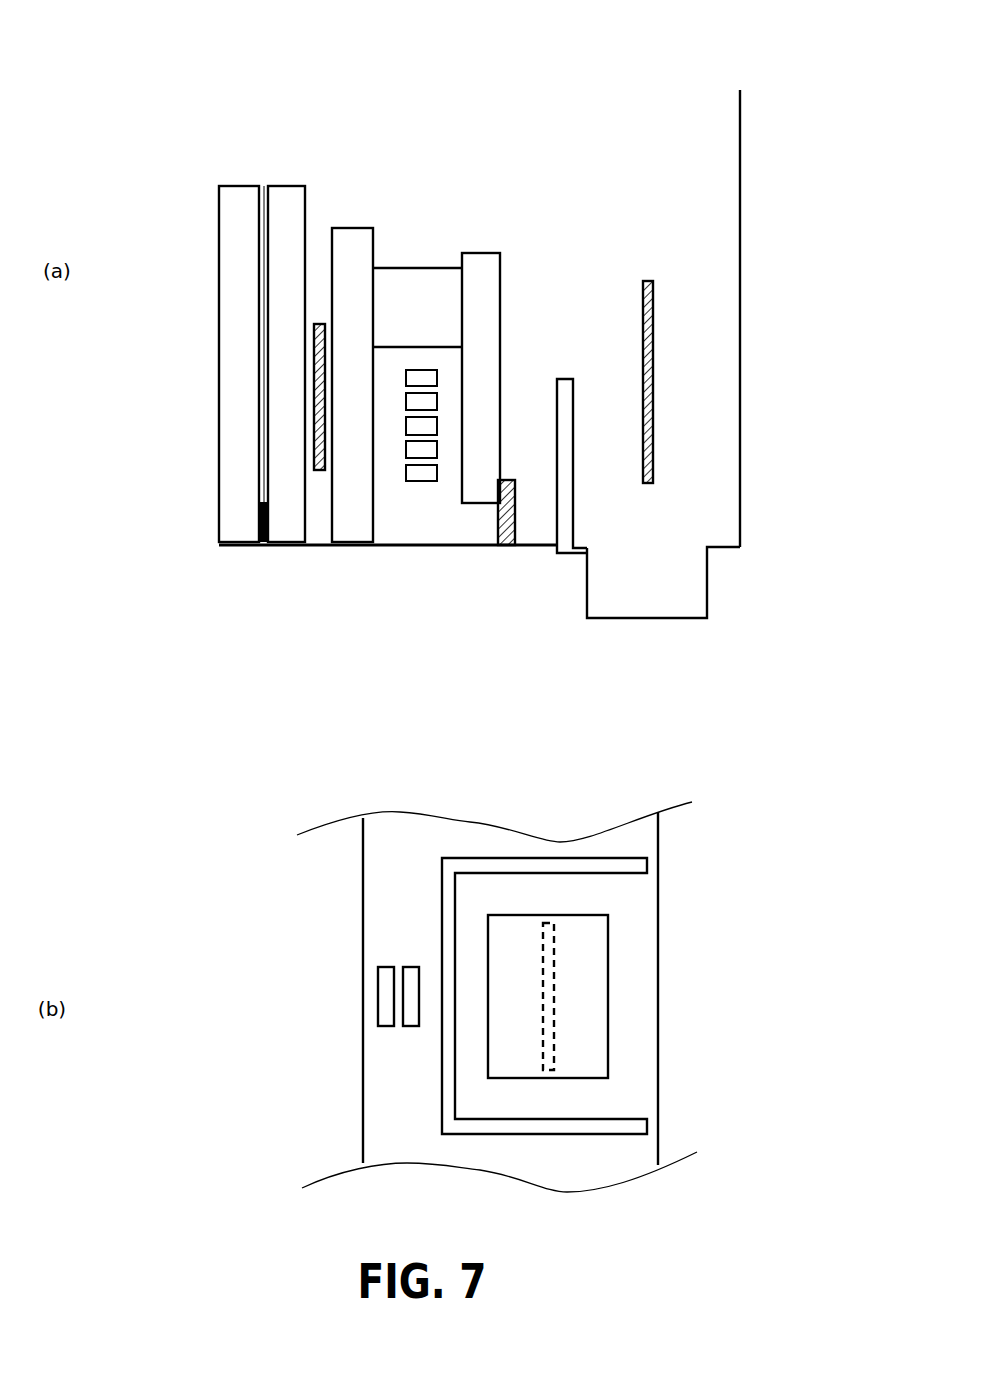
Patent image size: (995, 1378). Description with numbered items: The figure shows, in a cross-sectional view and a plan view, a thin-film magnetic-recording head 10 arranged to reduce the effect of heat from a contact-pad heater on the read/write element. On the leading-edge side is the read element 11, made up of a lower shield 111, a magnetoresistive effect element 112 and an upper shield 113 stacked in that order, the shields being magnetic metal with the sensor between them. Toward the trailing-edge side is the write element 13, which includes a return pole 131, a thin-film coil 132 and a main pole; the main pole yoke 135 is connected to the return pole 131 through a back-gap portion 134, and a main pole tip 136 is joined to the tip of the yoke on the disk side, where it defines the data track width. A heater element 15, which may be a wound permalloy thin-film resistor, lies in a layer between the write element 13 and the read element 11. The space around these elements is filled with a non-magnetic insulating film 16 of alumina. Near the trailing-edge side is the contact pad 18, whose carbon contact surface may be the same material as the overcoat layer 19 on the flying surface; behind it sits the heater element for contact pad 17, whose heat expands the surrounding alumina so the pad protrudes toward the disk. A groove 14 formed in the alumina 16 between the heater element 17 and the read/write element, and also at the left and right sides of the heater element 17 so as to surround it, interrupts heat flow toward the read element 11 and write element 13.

The thin-film magnetic-recording head 10 is at (598, 32).
The read element 11 is at (262, 550).
The lower shield 111 is at (219, 245).
The magnetoresistive effect element 112 is at (258, 520).
The upper shield 113 is at (295, 185).
The write element 13 is at (442, 566).
The return pole 131 is at (373, 242).
The thin-film coil 132 is at (407, 378).
The back-gap portion 134 is at (427, 267).
The main pole yoke 135 is at (487, 253).
The main pole tip 136 is at (497, 522).
The groove 14 is at (573, 435).
The heater element 15 is at (314, 383).
The non-magnetic insulating film 16 is at (534, 139).
The heater element for contact pad 17 is at (653, 352).
The contact pad 18 is at (583, 593).
The overcoat layer 19 is at (440, 550).